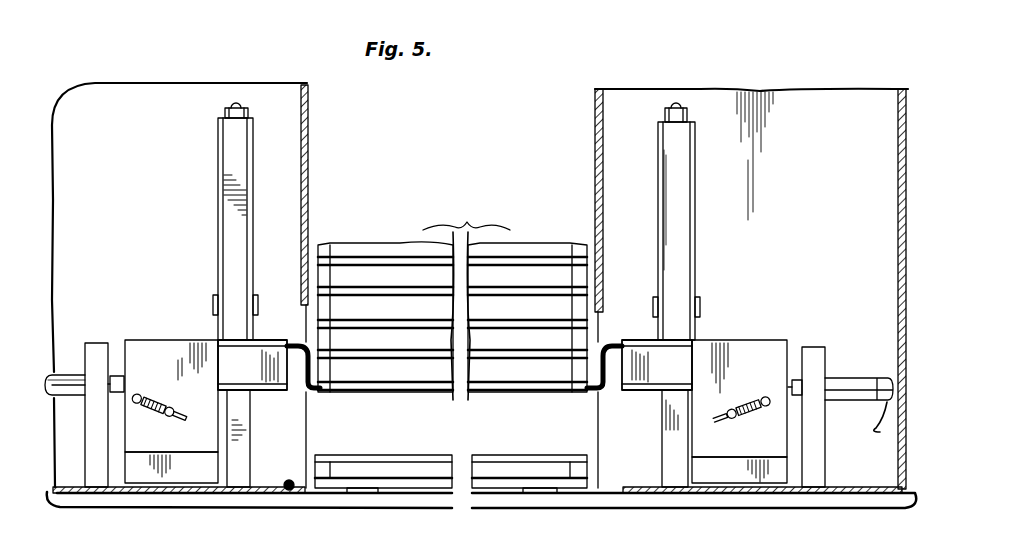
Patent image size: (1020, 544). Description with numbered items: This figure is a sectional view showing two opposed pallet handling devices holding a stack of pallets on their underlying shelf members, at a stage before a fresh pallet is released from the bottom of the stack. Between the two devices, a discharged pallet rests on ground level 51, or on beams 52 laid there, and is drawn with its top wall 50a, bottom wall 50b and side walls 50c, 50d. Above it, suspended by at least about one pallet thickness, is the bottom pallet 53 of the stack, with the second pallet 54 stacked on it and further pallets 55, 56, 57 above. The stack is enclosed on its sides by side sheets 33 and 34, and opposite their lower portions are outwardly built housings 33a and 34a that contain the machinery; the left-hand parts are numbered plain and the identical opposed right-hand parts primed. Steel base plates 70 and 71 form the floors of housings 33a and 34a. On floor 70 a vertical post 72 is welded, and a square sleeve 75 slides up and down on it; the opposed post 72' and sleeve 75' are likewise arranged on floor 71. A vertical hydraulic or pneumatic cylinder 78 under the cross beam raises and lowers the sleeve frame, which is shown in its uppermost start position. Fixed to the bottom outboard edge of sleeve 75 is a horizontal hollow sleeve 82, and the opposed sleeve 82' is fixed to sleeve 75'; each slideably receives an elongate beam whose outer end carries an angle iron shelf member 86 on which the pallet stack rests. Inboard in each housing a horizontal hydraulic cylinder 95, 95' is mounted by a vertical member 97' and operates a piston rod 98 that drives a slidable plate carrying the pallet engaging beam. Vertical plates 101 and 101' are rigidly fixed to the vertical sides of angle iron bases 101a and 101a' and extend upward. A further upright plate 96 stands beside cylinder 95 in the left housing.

The side sheet 33 is at (308, 126).
The housing 33a is at (176, 83).
The side sheet 34 is at (596, 128).
The housing 34a is at (905, 200).
The top wall 50a is at (385, 458).
The bottom wall 50b is at (500, 470).
The side wall 50c is at (342, 452).
The side wall 50d is at (570, 470).
The ground level 51 is at (287, 490).
The beams 52 is at (366, 494).
The suspended pallet 53 is at (427, 380).
The second pallet 54 is at (522, 380).
The stacked pallet 55 is at (345, 320).
The stacked pallet 56 is at (575, 297).
The stacked pallet 57 is at (528, 260).
The base plate 70 is at (62, 486).
The base plate 71 is at (850, 487).
The post 72 is at (255, 291).
The post 72' is at (654, 295).
The sleeve 75 is at (217, 229).
The sleeve 75' is at (693, 231).
The hydraulic or pneumatic cylinder 78 is at (213, 306).
The horizontal hollow sleeve 82 is at (253, 351).
The horizontal hollow sleeve 82' is at (639, 351).
The angle iron shelf member 86 is at (320, 396).
The horizontal hydraulic cylinder 95 is at (54, 369).
The horizontal hydraulic cylinder 95' is at (859, 395).
The support plate 96 is at (100, 345).
The vertical member 97' is at (811, 403).
The piston rod 98 is at (124, 380).
The vertical plate 101 is at (166, 491).
The vertical plate 101' is at (739, 384).
The angle iron base 101a is at (171, 403).
The angle iron base 101a' is at (739, 460).